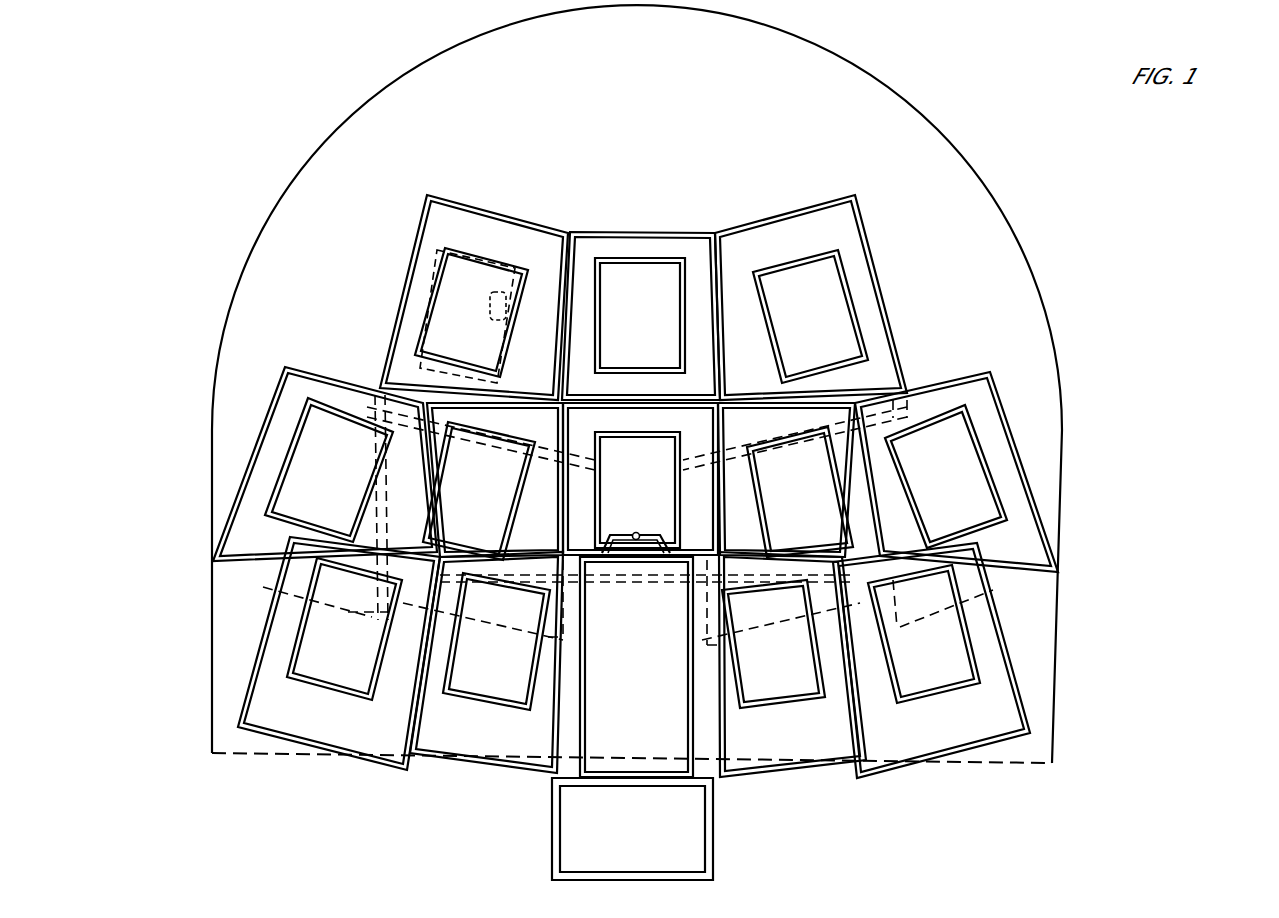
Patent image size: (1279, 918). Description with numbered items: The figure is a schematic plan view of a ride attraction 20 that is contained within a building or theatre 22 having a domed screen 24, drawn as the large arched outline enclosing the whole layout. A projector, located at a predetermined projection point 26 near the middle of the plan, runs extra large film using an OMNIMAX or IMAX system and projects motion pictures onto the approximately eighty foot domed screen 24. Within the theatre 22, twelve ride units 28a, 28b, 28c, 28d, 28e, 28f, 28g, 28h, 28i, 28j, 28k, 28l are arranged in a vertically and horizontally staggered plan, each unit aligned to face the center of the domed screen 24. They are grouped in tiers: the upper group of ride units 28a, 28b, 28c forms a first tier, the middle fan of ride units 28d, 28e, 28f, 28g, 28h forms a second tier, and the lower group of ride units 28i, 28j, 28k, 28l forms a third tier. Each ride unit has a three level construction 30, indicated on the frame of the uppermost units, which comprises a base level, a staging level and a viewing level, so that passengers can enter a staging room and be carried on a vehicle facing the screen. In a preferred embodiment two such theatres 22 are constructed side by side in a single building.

The ride attraction 20 is at (272, 143).
The theatre 22 is at (190, 342).
The domed screen 24 is at (262, 232).
The projection point 26 is at (637, 535).
The 3-level construction 30 is at (548, 220).
The ride unit 28a is at (488, 245).
The ride unit 28b is at (660, 250).
The ride unit 28c is at (785, 240).
The ride unit 28d is at (340, 405).
The ride unit 28e is at (488, 468).
The ride unit 28f is at (623, 425).
The ride unit 28g is at (793, 470).
The ride unit 28h is at (985, 438).
The ride unit 28i is at (328, 645).
The ride unit 28j is at (475, 722).
The ride unit 28k is at (775, 685).
The ride unit 28l is at (890, 722).